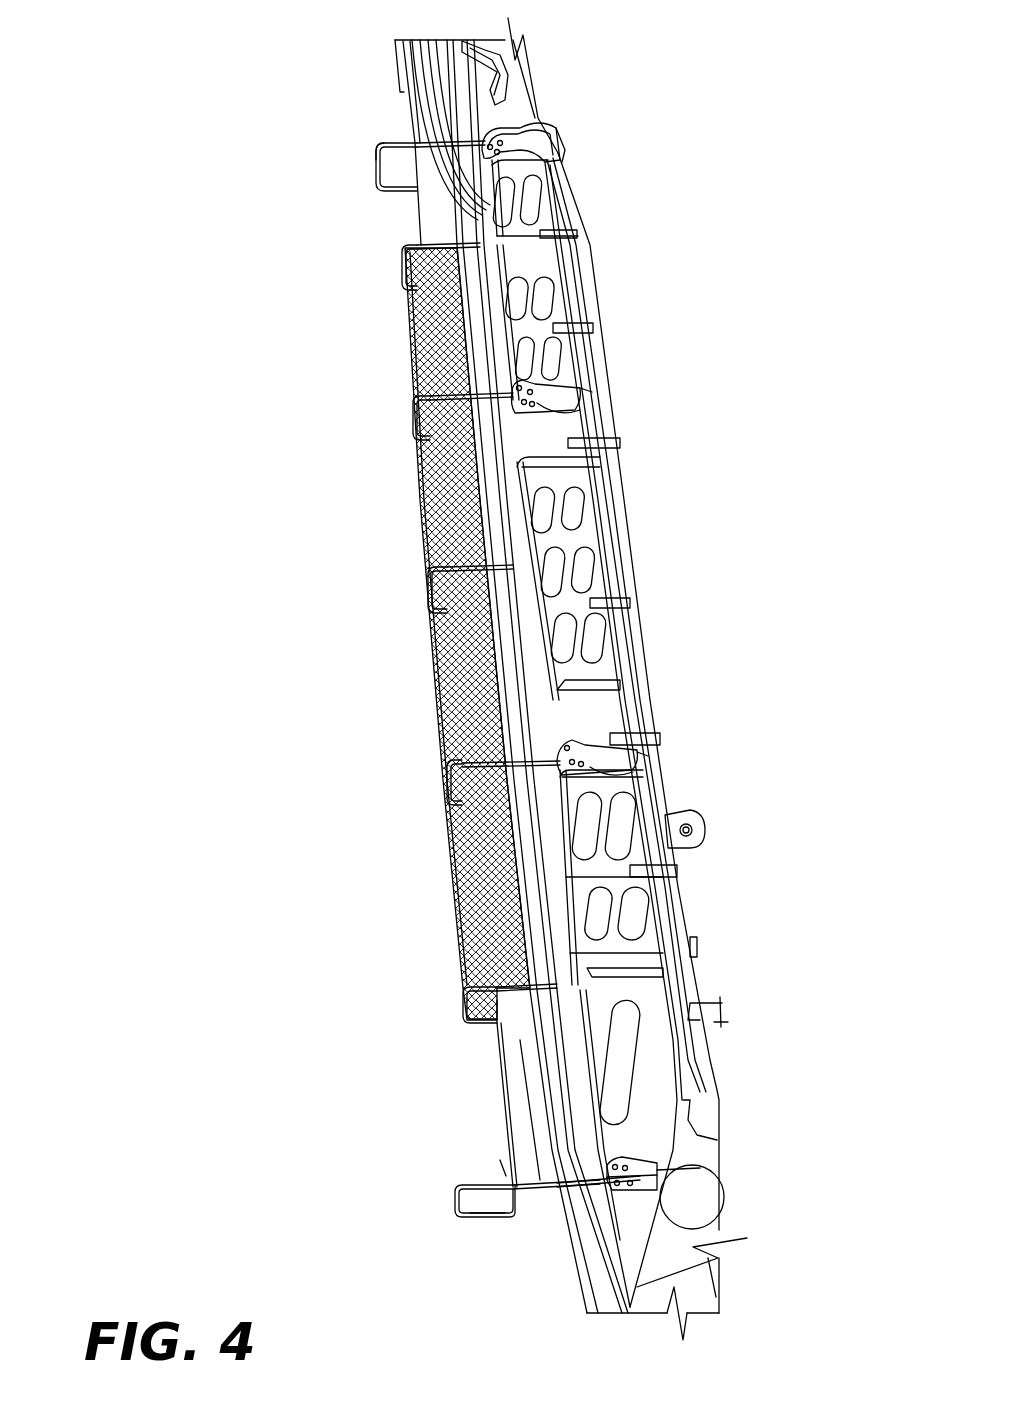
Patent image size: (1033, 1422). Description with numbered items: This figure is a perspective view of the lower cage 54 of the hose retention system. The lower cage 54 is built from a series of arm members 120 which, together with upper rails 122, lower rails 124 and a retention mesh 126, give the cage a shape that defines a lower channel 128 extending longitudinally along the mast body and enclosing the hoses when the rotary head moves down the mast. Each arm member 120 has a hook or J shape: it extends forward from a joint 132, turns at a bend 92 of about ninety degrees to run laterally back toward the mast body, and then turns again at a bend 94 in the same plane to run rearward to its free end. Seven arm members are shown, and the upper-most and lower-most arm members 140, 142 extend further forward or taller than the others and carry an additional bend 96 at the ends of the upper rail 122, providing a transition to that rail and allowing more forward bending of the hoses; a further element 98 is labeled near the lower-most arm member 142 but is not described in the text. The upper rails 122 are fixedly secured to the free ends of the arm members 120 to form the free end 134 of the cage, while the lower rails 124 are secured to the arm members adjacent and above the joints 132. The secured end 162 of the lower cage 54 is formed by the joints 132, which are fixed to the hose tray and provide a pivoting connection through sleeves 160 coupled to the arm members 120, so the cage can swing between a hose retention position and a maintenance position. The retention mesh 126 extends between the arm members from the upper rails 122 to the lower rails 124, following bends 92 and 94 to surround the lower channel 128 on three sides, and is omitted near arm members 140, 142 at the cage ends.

The lower cage 54 is at (345, 833).
The bend 92 is at (378, 142).
The bend 94 is at (380, 187).
The additional bend 96 is at (415, 196).
The lower bar 98 is at (507, 1220).
The arm members 120 is at (377, 155).
The upper rails 122 is at (500, 1140).
The lower rails 124 is at (530, 1058).
The retention mesh 126 is at (436, 678).
The lower channel 128 is at (527, 1102).
The joints 132 is at (508, 122).
The free end 134 is at (503, 1169).
The upper-most arm member 140 is at (375, 148).
The lower-most arm member 142 is at (450, 1217).
The sleeve 160 is at (573, 1190).
The secured end 162 is at (568, 160).